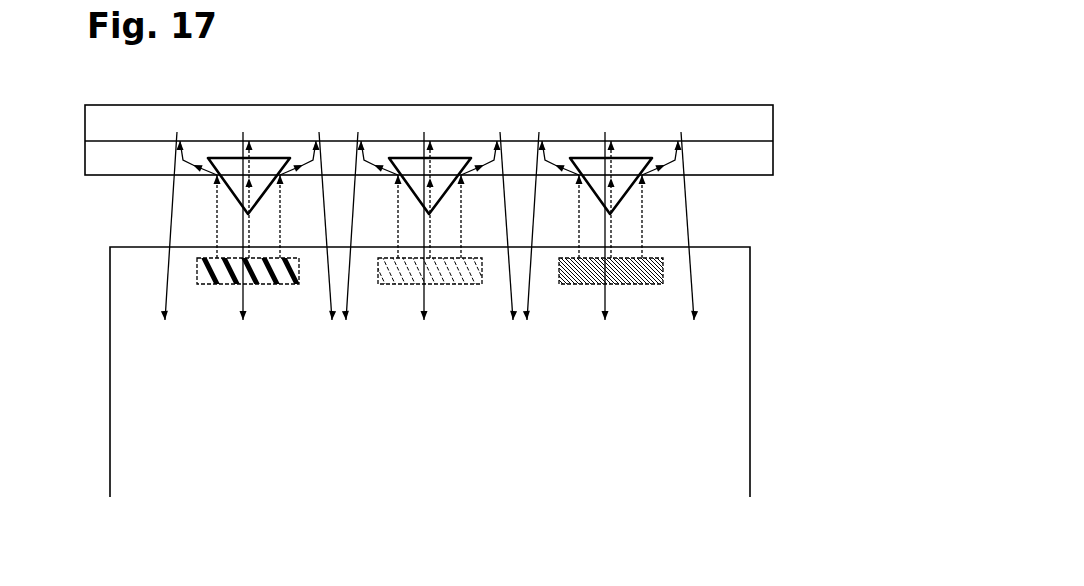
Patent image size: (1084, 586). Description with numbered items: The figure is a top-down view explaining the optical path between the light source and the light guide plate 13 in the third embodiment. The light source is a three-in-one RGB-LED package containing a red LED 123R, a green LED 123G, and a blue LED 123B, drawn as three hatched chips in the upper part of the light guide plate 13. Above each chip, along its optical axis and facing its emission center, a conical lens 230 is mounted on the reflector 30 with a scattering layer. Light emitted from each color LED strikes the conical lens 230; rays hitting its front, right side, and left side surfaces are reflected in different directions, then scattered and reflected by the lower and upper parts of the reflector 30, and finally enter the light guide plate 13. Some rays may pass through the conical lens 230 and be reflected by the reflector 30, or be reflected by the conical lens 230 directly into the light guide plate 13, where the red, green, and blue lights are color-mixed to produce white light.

The reflector with a scattering layer 30 is at (767, 123).
The light guide plate 13 is at (727, 403).
The conical lens 230 is at (410, 167).
The red LED 123R is at (217, 280).
The green LED 123G is at (402, 280).
The blue LED 123B is at (590, 280).